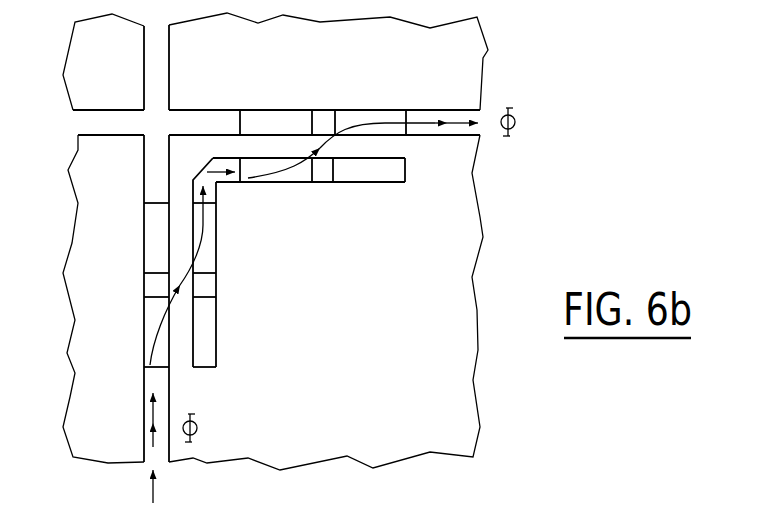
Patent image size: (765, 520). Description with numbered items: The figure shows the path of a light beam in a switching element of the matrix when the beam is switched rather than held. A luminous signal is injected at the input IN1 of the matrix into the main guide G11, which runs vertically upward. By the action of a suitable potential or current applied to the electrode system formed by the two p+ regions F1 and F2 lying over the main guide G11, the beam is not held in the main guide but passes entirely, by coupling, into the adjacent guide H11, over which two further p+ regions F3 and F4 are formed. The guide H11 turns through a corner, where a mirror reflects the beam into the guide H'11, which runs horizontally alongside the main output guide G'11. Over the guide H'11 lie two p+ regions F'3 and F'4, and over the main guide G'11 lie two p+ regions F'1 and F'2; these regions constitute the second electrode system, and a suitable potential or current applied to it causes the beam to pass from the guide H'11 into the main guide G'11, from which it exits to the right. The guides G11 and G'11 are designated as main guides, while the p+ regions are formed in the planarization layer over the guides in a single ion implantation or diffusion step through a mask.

The main guide G11 is at (138, 428).
The p+ region F1 is at (140, 332).
The p+ region F2 is at (142, 247).
The main guide G'11 is at (306, 82).
The p+ region F'1 is at (277, 95).
The p+ region F'2 is at (370, 93).
The guide H11 is at (228, 290).
The p+ region F3 is at (215, 332).
The p+ region F4 is at (217, 238).
The guide H'11 is at (378, 199).
The p+ region F'3 is at (278, 203).
The p+ region F'4 is at (371, 203).
The input IN1 is at (175, 495).